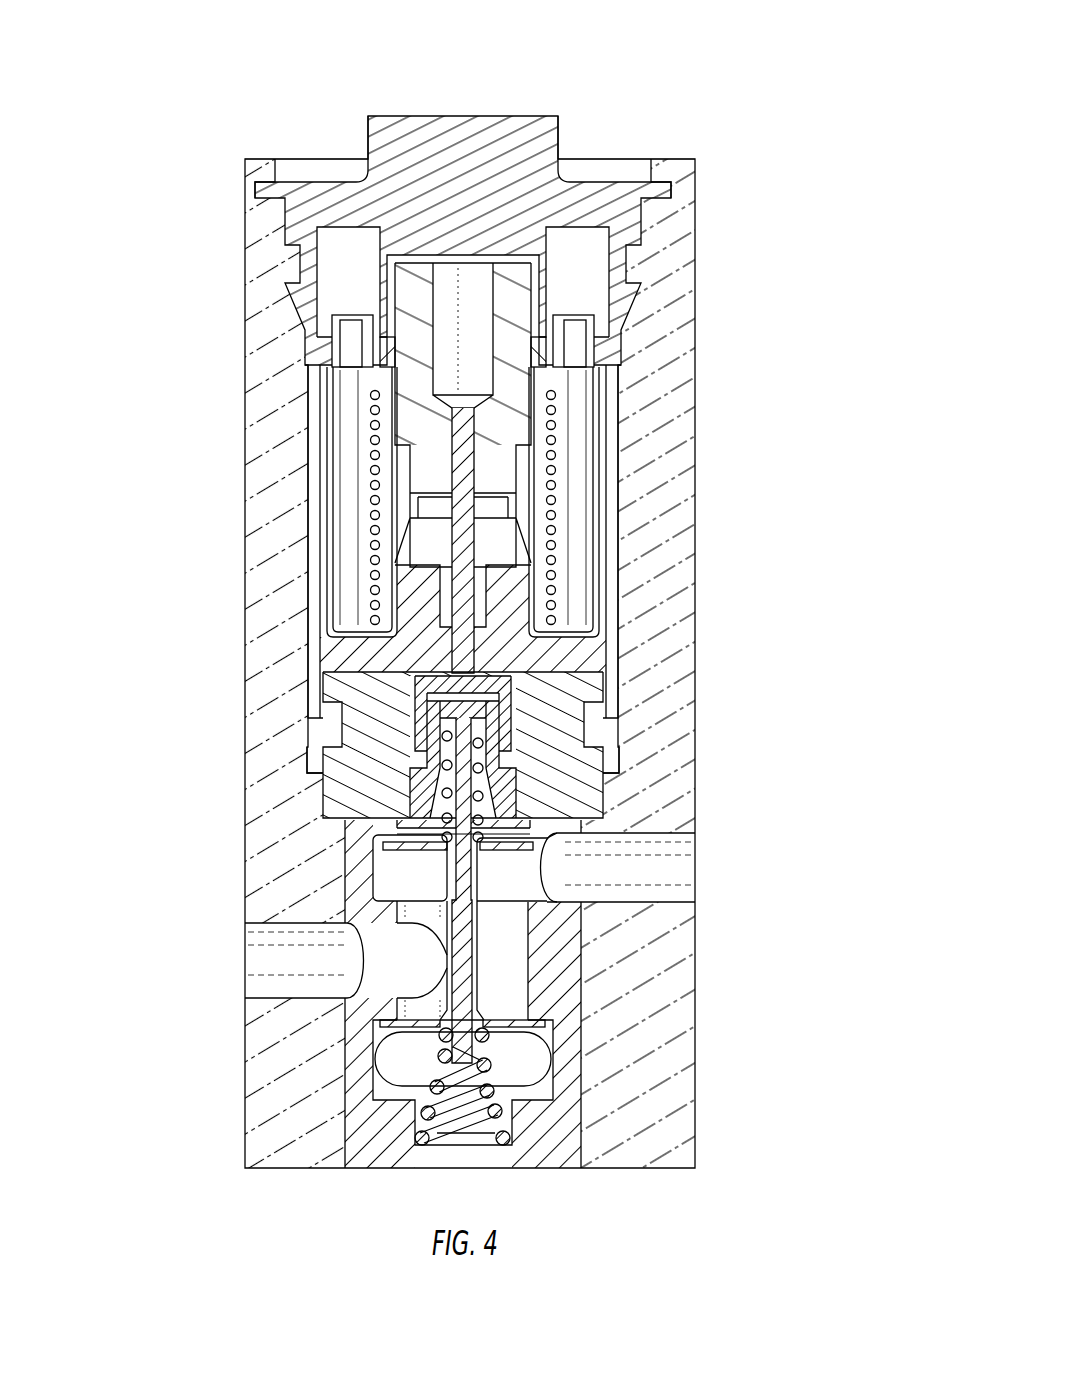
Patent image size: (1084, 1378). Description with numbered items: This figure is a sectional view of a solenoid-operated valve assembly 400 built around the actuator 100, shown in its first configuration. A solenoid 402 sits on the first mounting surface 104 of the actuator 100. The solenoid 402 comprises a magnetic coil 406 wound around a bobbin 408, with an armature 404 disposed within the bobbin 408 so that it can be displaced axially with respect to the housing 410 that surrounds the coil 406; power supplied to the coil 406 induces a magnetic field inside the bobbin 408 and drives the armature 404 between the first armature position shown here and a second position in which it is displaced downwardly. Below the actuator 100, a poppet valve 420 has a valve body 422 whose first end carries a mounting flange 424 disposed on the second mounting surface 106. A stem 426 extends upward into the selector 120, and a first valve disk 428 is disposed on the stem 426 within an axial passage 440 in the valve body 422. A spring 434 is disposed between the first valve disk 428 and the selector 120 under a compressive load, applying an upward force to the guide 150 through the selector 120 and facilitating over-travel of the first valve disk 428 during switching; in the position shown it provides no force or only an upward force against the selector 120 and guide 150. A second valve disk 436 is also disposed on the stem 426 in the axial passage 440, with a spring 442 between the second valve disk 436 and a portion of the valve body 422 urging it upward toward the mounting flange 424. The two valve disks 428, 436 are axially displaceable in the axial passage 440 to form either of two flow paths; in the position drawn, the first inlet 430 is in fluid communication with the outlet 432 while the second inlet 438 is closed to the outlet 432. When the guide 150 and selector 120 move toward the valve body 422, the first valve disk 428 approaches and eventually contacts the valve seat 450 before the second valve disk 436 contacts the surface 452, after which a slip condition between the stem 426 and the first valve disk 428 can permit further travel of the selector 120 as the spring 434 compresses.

The solenoid-operated valve assembly 400 is at (643, 89).
The solenoid 402 is at (622, 550).
The armature 404 is at (477, 355).
The magnetic coil 406 is at (372, 484).
The bobbin 408 is at (451, 477).
The housing 410 is at (312, 459).
The first mounting surface 104 is at (352, 668).
The spring 434 is at (440, 740).
The actuator 100 is at (321, 753).
The second mounting surface 106 is at (340, 818).
The guide 150 is at (503, 718).
The selector 120 is at (510, 793).
The poppet valve 420 is at (343, 866).
The mounting flange 424 is at (640, 833).
The first valve disk 428 is at (397, 842).
The valve seat 450 is at (387, 898).
The first inlet 430 is at (680, 882).
The outlet 432 is at (271, 980).
The axial passage 440 is at (527, 877).
The stem 426 is at (466, 1008).
The valve body 422 is at (580, 1000).
The second valve disk 436 is at (378, 1048).
The surface 452 is at (387, 1087).
The second inlet 438 is at (532, 1067).
The spring 442 is at (514, 1140).